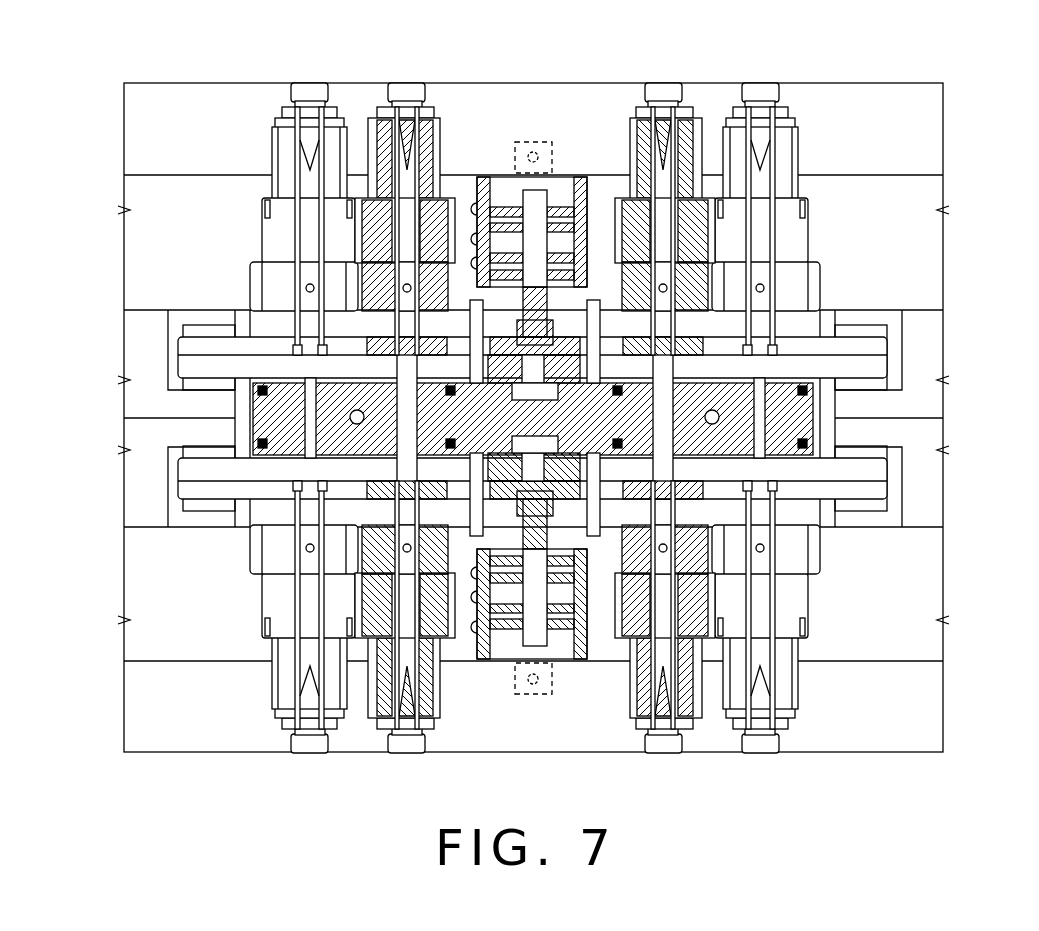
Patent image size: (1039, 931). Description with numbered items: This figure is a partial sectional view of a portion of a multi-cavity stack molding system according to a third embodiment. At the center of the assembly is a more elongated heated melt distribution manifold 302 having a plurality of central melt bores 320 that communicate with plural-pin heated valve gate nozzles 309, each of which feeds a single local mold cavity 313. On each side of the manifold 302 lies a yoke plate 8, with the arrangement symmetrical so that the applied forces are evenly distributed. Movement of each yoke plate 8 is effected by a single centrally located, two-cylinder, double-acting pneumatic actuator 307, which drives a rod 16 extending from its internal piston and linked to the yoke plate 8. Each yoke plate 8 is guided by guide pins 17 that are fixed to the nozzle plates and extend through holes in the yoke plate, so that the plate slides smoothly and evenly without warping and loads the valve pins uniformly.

The yoke plate 8 is at (875, 347).
The rod 16 is at (553, 295).
The guide pin 17 is at (480, 317).
The heated melt distribution manifold 302 is at (790, 405).
The two-cylinder, double-acting pneumatic actuator 307 is at (503, 193).
The plural-pin heated valve gate nozzle 309 is at (288, 118).
The local mold cavity 313 is at (400, 108).
The central melt bore 320 is at (350, 416).